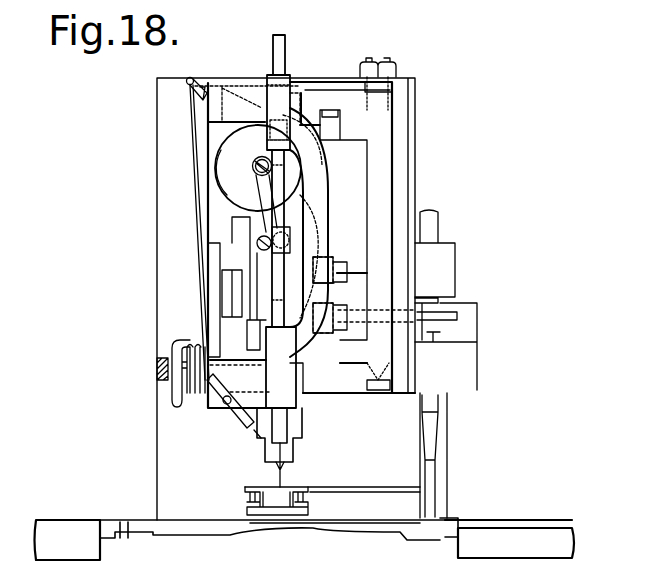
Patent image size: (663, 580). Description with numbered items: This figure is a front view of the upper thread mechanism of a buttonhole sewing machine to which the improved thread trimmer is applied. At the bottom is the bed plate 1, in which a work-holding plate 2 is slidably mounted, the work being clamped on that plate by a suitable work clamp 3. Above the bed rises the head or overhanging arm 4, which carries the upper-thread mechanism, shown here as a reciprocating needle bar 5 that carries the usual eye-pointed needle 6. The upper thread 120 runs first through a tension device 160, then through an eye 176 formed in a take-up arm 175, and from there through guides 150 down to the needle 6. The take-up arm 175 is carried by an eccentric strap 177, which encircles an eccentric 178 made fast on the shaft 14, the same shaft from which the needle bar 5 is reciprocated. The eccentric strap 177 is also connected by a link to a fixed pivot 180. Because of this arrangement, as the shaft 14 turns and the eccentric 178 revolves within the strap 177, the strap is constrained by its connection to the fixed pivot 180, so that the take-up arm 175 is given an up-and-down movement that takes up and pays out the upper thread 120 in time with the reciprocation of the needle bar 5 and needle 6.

The bed plate 1 is at (505, 528).
The work-holding plate 2 is at (388, 524).
The work clamp 3 is at (297, 518).
The head or overhanging arm 4 is at (403, 194).
The needle bar 5 is at (279, 425).
The eye-pointed needle 6 is at (283, 478).
The shaft 14 is at (297, 194).
The upper thread 120 is at (258, 436).
The guides 150 is at (233, 415).
The tension device 160 is at (186, 381).
The take-up arm 175 is at (206, 78).
The eye 176 is at (187, 82).
The eccentric strap 177 is at (218, 157).
The eccentric 178 is at (227, 185).
The fixed pivot 180 is at (306, 122).